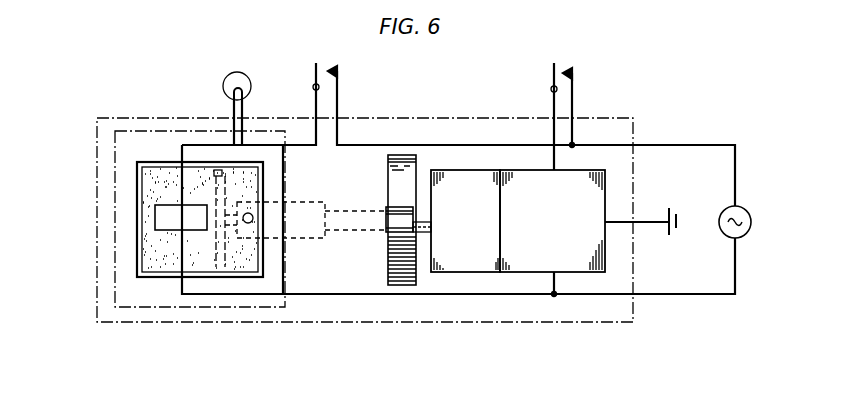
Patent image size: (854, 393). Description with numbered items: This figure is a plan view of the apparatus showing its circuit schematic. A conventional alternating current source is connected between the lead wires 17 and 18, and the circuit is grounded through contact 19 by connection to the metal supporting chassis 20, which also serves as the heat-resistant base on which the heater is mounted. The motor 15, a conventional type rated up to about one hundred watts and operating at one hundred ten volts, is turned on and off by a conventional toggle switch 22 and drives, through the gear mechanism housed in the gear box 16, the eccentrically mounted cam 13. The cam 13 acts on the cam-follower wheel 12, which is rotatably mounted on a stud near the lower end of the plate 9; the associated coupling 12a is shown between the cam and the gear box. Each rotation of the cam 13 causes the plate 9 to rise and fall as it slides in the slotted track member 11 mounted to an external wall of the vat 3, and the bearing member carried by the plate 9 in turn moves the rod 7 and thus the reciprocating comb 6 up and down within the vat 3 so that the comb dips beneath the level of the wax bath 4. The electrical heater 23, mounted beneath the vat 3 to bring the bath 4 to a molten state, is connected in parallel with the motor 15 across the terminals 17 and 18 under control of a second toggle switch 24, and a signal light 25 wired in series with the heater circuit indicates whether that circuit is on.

The vat 3 is at (159, 166).
The bath 4 is at (156, 266).
The reciprocating comb 6 is at (222, 238).
The rod 7 is at (248, 223).
The plate 9 is at (270, 231).
The track member 11 is at (308, 204).
The cam-follower wheel 12 is at (388, 211).
The coupling 12a is at (343, 221).
The cam 13 is at (392, 176).
The motor 15 is at (607, 187).
The gear box 16 is at (476, 184).
The lead wire 17 is at (697, 296).
The lead wire 18 is at (697, 146).
The contact 19 is at (673, 231).
The heat-resistant base 20 is at (345, 322).
The toggle switch 22 is at (538, 74).
The electrical heater 23 is at (155, 218).
The toggle switch 24 is at (300, 73).
The signal light 25 is at (237, 78).